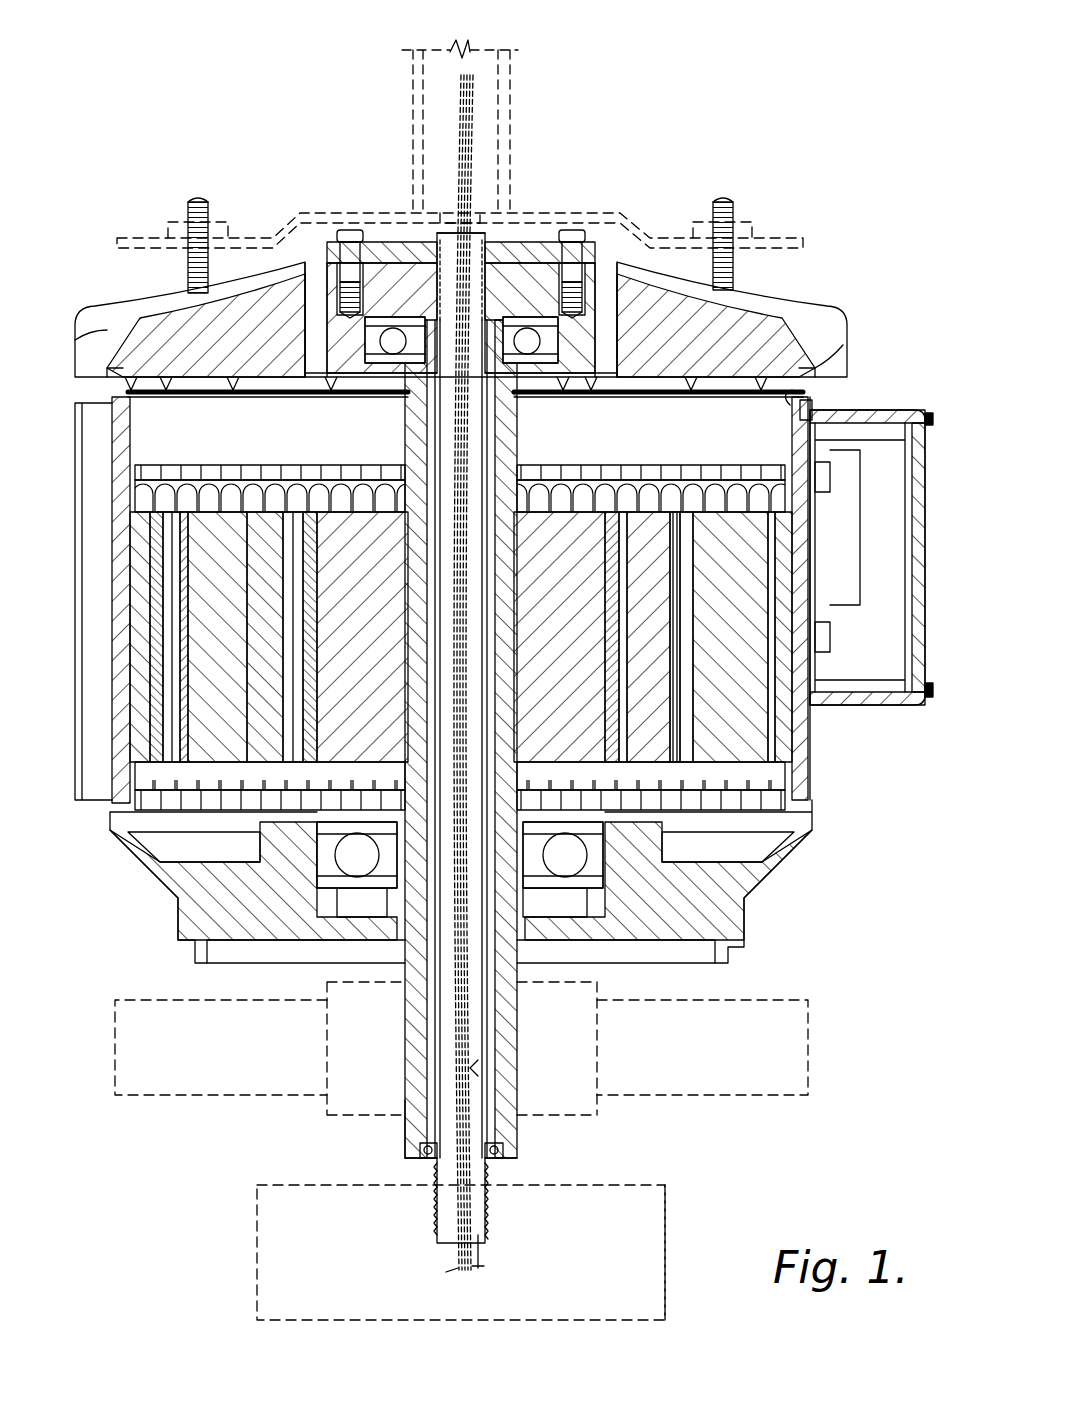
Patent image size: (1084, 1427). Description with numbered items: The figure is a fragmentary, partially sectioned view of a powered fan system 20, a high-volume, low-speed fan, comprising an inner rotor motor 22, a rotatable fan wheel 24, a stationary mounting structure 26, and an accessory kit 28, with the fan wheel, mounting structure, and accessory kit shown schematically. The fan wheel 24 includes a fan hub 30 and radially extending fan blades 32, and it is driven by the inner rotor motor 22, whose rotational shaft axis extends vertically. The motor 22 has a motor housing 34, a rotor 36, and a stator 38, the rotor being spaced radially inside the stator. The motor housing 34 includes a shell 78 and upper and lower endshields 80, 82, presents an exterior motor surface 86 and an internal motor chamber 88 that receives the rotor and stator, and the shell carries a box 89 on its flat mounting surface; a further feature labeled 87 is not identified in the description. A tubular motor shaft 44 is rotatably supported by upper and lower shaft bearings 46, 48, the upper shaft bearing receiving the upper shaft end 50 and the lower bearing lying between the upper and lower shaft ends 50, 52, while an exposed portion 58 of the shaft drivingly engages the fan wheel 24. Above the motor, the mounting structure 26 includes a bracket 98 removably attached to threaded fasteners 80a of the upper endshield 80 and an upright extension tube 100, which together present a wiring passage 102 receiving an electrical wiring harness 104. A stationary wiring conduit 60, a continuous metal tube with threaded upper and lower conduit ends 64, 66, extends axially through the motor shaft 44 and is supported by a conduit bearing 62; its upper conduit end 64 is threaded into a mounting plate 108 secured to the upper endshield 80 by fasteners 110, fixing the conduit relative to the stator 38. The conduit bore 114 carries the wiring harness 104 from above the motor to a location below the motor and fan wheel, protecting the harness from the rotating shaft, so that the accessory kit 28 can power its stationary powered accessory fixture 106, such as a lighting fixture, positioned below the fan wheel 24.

The powered fan system 20 is at (668, 108).
The inner rotor motor 22 is at (107, 318).
The rotatable fan wheel 24 is at (790, 1097).
The stationary mounting structure 26 is at (512, 74).
The accessory kit 28 is at (257, 1250).
The fan hub 30 is at (597, 1115).
The fan blades 32 is at (190, 1097).
The motor housing 34 is at (815, 320).
The rotor 36 is at (565, 520).
The stator 38 is at (707, 520).
The motor shaft 44 is at (412, 430).
The upper shaft bearing 46 is at (527, 366).
The lower shaft bearing 48 is at (605, 878).
The upper shaft end 50 is at (480, 330).
The lower shaft end 52 is at (520, 1165).
The exposed portion 58 is at (415, 1133).
The wiring conduit 60 is at (437, 1233).
The conduit bearing 62 is at (427, 1154).
The upper conduit end 64 is at (488, 236).
The lower conduit end 66 is at (485, 1236).
The shell 78 is at (105, 803).
The upper endshield 80 is at (160, 347).
The threaded fasteners 80a is at (198, 200).
The lower endshield 82 is at (180, 935).
The exterior motor surface 86 is at (808, 770).
The clip 87 is at (806, 408).
The internal motor chamber 88 is at (808, 738).
The box 89 is at (925, 650).
The bracket 98 is at (330, 212).
The upright extension tube 100 is at (413, 72).
The wiring passage 102 is at (454, 48).
The electrical wiring harness 104 is at (461, 122).
The powered accessory fixture 106 is at (665, 1218).
The mounting plate 108 is at (560, 244).
The fasteners 110 is at (350, 246).
The conduit bore 114 is at (474, 1068).